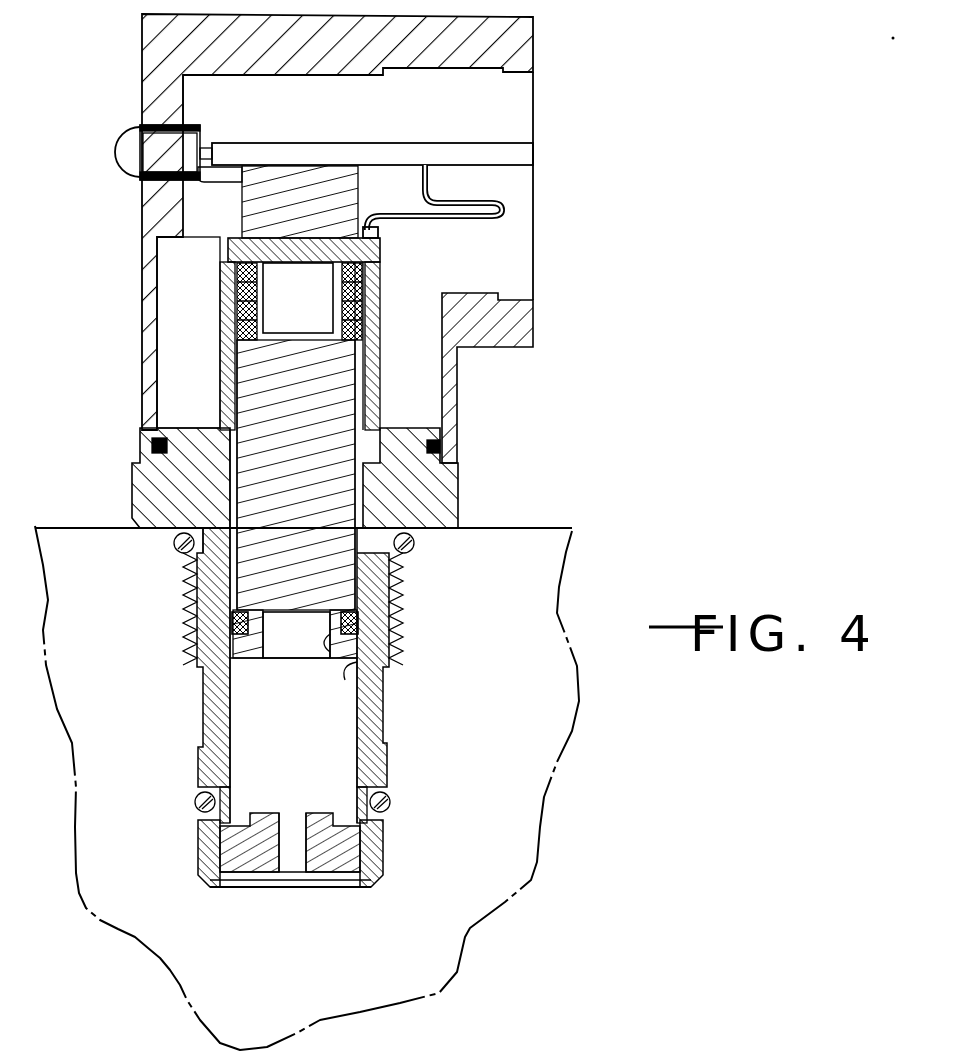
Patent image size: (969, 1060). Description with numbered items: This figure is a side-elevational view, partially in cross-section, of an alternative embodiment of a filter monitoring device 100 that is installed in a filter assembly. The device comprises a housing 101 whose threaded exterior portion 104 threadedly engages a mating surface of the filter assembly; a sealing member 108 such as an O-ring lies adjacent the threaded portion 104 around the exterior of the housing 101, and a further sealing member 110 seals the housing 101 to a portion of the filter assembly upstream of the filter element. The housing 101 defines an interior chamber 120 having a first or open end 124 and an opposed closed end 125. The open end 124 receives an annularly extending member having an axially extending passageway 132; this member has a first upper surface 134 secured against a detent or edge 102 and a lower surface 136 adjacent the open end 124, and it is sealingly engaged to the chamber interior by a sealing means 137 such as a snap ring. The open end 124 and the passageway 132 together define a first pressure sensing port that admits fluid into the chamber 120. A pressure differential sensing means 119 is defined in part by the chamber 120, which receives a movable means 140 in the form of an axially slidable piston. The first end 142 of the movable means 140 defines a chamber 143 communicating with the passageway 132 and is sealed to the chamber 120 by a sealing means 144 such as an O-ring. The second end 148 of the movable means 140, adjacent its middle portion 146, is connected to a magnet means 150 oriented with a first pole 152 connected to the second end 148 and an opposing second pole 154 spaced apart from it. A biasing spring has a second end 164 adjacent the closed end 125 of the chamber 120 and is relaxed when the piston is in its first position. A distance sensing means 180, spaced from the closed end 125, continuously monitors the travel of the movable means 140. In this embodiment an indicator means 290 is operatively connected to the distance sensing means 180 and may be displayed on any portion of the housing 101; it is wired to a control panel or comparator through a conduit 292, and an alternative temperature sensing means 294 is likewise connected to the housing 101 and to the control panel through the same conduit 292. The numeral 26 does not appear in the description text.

The valve bore 26 is at (230, 548).
The filter monitoring device 100 is at (132, 345).
The housing 101 is at (124, 492).
The detent or edge 102 is at (383, 860).
The threaded exterior portion 104 is at (188, 613).
The sealing member 108 is at (174, 538).
The sealing member 110 is at (393, 805).
The pressure differential sensing means 119 is at (195, 412).
The interior chamber 120 is at (149, 566).
The first or open end 124 is at (300, 900).
The second opposed or closed end 125 is at (380, 258).
The passageway 132 is at (287, 853).
The first upper surface 134 is at (383, 830).
The lower surface 136 is at (342, 887).
The sealing means 137 is at (350, 880).
The movable means 140 is at (378, 413).
The first end 142 is at (383, 678).
The chamber 143 is at (333, 642).
The sealing means 144 is at (243, 622).
The middle portion 146 is at (362, 388).
The second end 148 is at (365, 312).
The magnet means 150 is at (533, 307).
The first pole 152 is at (265, 345).
The second pole 154 is at (380, 286).
The second end 164 is at (228, 240).
The distance sensing means 180 is at (140, 148).
The indicator means 290 is at (126, 128).
The conduit 292 is at (387, 143).
The temperature sensing means 294 is at (483, 193).